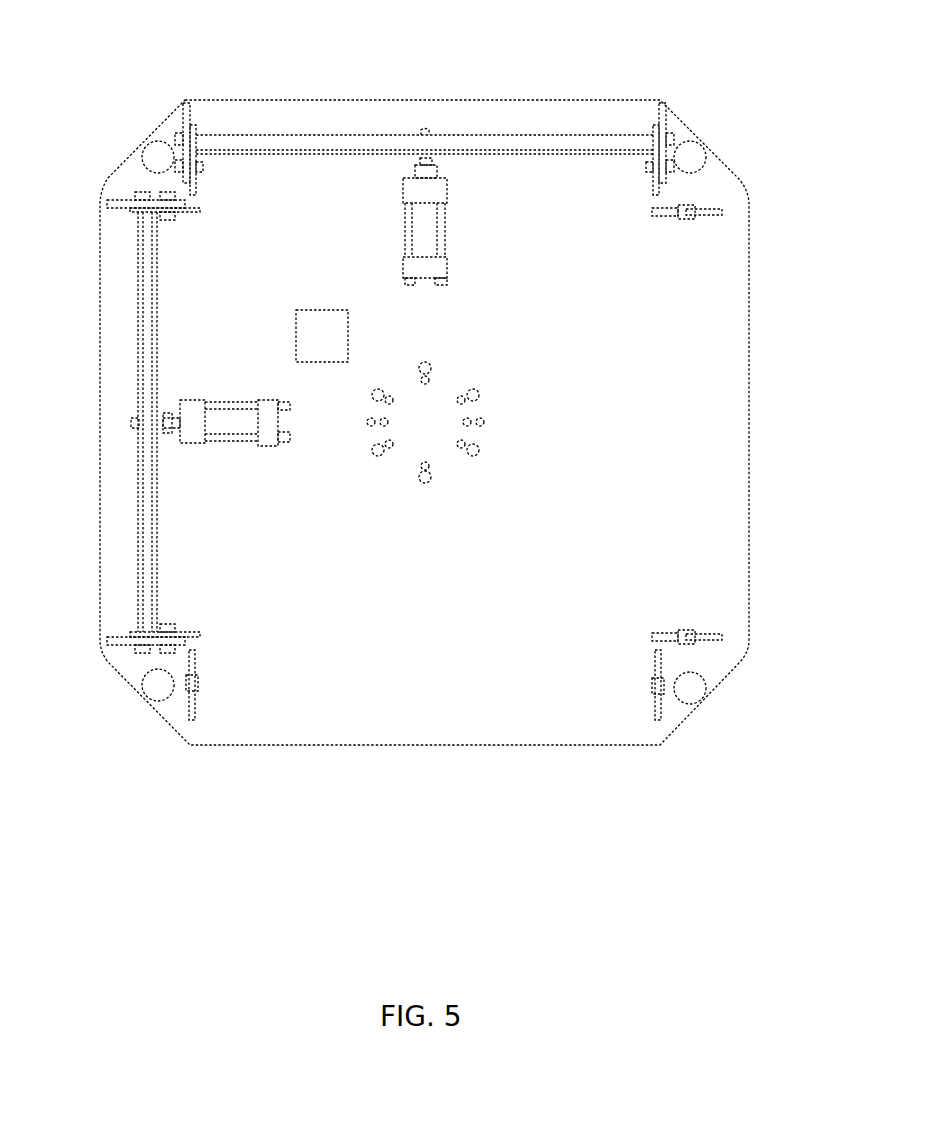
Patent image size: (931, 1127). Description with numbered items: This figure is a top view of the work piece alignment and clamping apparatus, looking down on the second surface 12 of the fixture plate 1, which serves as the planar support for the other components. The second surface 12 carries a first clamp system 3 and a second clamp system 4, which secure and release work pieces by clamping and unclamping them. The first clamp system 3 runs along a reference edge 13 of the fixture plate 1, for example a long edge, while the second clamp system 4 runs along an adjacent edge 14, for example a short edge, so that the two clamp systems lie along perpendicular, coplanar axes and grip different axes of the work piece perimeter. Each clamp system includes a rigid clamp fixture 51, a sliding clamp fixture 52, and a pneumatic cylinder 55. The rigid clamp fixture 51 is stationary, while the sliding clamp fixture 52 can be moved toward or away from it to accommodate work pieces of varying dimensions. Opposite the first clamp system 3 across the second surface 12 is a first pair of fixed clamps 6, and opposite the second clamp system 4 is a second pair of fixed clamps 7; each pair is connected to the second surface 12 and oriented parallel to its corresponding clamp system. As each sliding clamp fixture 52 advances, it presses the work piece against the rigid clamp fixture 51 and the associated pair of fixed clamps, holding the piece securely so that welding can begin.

The fixture plate 1 is at (426, 773).
The first clamp system 3 is at (84, 488).
The second clamp system 4 is at (455, 82).
The first pair of fixed clamps 6 is at (718, 212).
The second pair of fixed clamps 7 is at (195, 710).
The second surface 12 is at (740, 514).
The reference edge 13 is at (100, 413).
The adjacent edge 14 is at (368, 99).
The rigid clamp fixture 51 is at (662, 100).
The sliding clamp fixture 52 is at (186, 100).
The pneumatic cylinder 55 is at (432, 235).